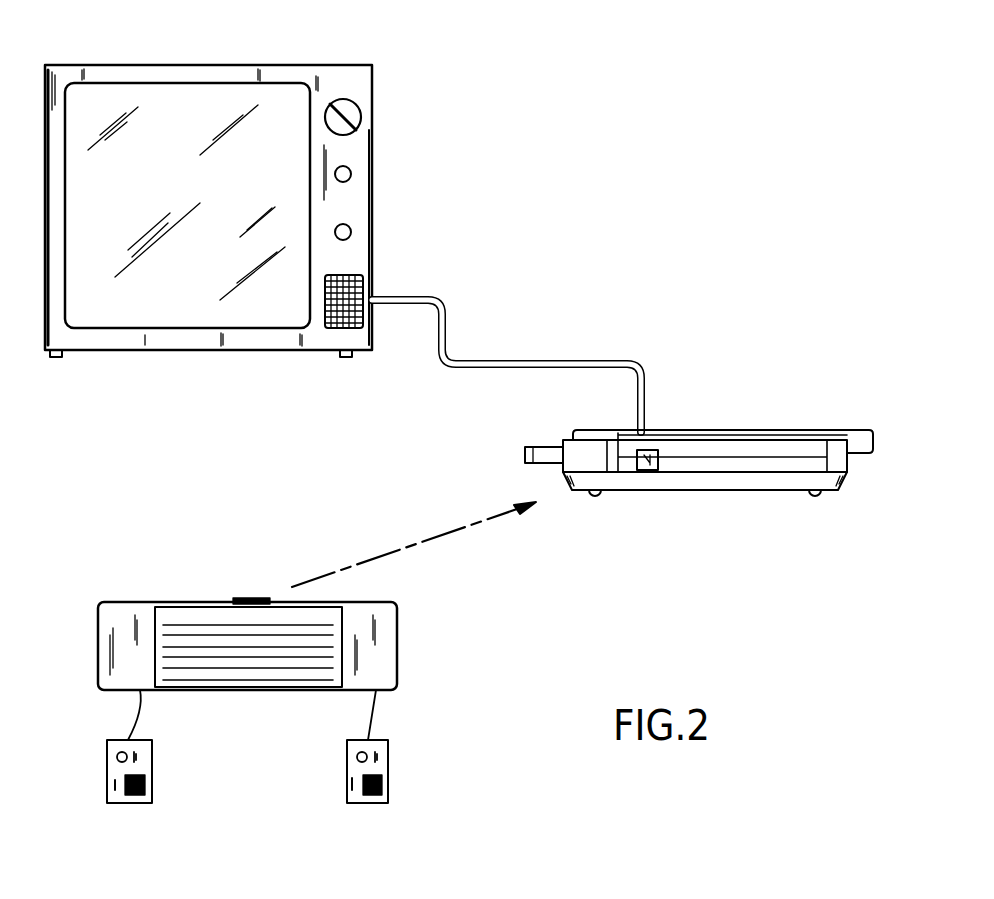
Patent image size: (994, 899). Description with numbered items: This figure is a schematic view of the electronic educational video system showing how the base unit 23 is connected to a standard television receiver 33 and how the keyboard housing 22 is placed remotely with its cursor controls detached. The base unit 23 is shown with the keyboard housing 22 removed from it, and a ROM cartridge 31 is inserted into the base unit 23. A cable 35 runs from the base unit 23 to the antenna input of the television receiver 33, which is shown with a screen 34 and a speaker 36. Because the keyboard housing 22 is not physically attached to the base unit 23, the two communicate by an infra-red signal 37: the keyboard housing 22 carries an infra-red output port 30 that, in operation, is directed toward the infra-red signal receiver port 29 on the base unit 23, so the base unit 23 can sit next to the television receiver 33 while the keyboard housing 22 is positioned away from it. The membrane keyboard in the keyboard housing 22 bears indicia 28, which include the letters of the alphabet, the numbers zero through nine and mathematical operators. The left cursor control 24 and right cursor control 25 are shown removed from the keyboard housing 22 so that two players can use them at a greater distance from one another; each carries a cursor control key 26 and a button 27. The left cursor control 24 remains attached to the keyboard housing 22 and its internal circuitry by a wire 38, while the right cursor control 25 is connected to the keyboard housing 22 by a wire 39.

The keyboard housing 22 is at (397, 636).
The base unit 23 is at (847, 475).
The left cursor control 24 is at (152, 770).
The right cursor control 25 is at (388, 770).
The cursor control key 26 is at (352, 783).
The button 27 is at (357, 757).
The indicia 28 is at (197, 628).
The infra-red signal receiver port 29 is at (650, 470).
The infra-red output port 30 is at (260, 600).
The ROM cartridge 31 is at (540, 447).
The television receiver 33 is at (372, 149).
The screen 34 is at (186, 100).
The cable 35 is at (533, 360).
The speaker 36 is at (363, 265).
The infra-red signal 37 is at (425, 540).
The wire 38 is at (130, 712).
The wire 39 is at (375, 708).